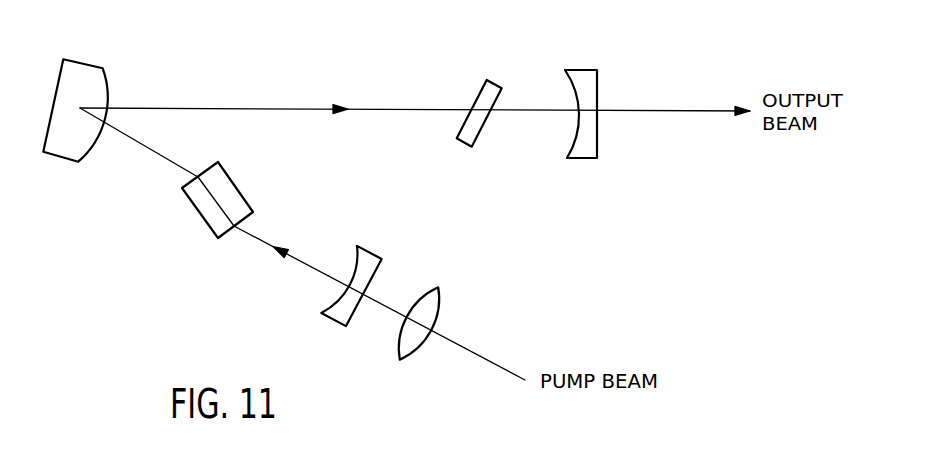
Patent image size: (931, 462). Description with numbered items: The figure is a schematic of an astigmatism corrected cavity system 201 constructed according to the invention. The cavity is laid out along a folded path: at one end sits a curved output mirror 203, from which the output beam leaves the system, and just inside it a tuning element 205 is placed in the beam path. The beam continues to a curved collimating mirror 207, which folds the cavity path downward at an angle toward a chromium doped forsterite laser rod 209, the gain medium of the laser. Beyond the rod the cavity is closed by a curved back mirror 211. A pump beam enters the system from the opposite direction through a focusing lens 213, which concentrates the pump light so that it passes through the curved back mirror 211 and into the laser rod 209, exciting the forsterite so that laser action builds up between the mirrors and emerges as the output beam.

The astigmatism corrected cavity system 201 is at (315, 72).
The curved output mirror 203 is at (600, 88).
The tuning element 205 is at (495, 80).
The curved collimating mirror 207 is at (93, 82).
The chromium doped forsterite laser rod 209 is at (243, 192).
The curved back mirror 211 is at (332, 318).
The focusing lens 213 is at (437, 310).